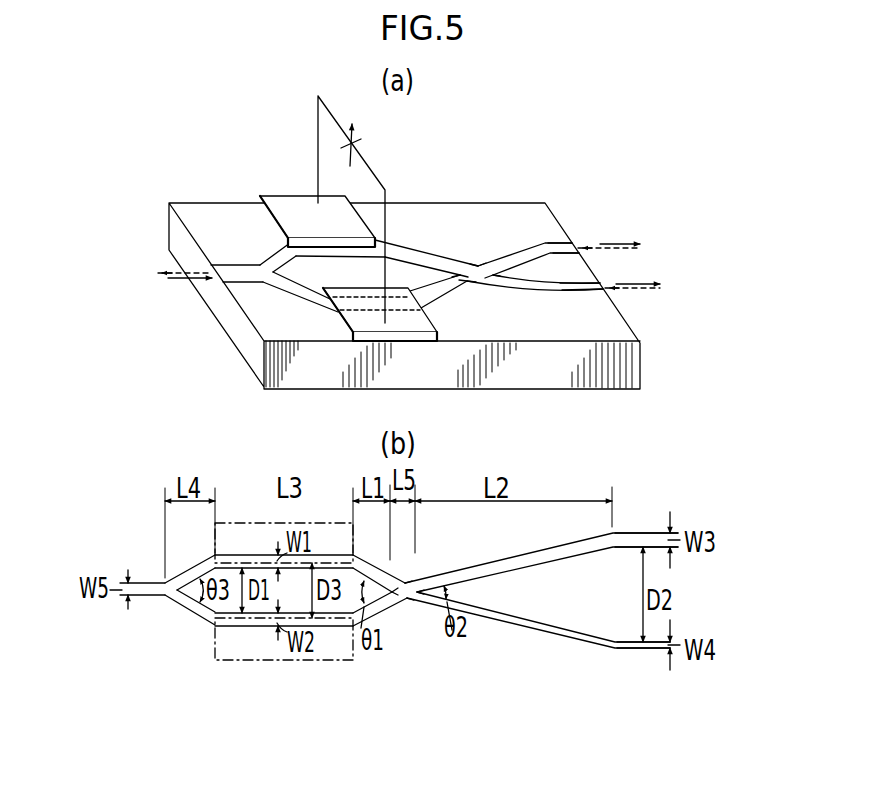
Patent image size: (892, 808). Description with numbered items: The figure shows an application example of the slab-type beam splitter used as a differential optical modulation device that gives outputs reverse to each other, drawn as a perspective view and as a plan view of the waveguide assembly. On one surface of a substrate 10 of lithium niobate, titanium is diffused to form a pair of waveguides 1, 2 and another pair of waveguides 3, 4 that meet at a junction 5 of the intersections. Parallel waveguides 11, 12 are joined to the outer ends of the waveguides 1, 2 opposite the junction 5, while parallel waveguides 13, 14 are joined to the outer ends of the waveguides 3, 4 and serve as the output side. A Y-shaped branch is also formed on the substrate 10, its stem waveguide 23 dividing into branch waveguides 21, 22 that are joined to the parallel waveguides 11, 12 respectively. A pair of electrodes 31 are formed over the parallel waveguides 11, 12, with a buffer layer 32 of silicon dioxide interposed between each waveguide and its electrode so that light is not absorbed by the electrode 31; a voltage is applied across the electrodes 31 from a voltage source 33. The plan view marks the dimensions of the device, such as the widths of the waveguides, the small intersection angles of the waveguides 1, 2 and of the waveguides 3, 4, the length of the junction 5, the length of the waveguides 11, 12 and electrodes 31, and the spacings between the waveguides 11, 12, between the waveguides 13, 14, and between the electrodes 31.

The waveguide 1 is at (433, 257).
The waveguide 2 is at (450, 292).
The waveguide 3 is at (512, 257).
The waveguide 4 is at (552, 288).
The junction 5 is at (488, 277).
The substrate 10 is at (632, 367).
The parallel waveguide 11 is at (331, 250).
The parallel waveguide 12 is at (355, 307).
The parallel waveguide 13 is at (565, 248).
The parallel waveguide 14 is at (588, 287).
The branch waveguide 21 is at (270, 257).
The branch waveguide 22 is at (295, 296).
The input waveguide 23 is at (243, 277).
The electrode 31 is at (294, 203).
The buffer layer 32 is at (268, 223).
The voltage source 33 is at (355, 147).